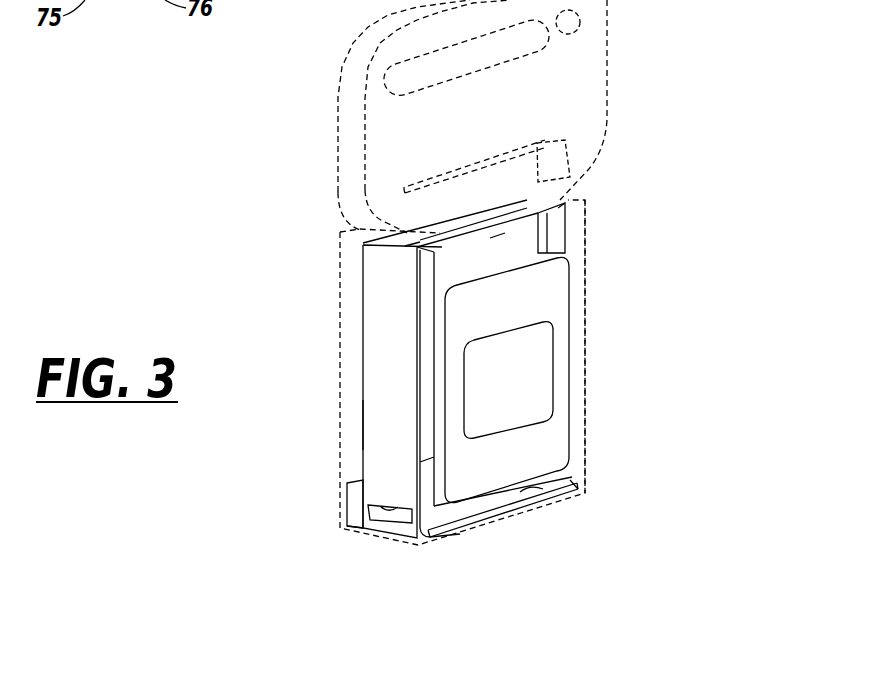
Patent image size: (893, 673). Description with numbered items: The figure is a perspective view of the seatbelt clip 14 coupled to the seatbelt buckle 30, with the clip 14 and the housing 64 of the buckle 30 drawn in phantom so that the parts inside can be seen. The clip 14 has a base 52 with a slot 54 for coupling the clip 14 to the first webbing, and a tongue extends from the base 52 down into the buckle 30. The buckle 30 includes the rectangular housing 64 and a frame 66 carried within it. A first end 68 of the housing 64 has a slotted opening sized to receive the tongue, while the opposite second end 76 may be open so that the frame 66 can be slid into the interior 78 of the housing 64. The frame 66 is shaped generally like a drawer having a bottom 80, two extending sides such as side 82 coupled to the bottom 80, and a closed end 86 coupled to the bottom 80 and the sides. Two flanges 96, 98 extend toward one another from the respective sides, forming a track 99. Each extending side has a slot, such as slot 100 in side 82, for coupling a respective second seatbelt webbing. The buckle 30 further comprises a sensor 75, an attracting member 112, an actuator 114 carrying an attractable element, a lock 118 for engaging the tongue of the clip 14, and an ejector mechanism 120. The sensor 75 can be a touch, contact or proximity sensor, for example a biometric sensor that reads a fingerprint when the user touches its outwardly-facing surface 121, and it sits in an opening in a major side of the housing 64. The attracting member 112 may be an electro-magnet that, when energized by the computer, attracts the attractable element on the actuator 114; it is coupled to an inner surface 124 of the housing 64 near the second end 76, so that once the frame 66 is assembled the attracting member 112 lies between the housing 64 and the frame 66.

The clip 14 is at (612, 125).
The buckle 30 is at (338, 275).
The base 52 is at (607, 87).
The slot 54 is at (578, 20).
The housing 64 is at (588, 227).
The frame 66 is at (571, 247).
The first end 68 is at (568, 188).
The sensor 75 is at (529, 395).
The second end 76 is at (567, 510).
The interior 78 is at (352, 358).
The bottom 80 is at (403, 240).
The extending side 82 is at (380, 418).
The closed end 86 is at (462, 533).
The flange 96 is at (427, 275).
The flange 98 is at (558, 208).
The track 99 is at (412, 246).
The slot 100 is at (385, 508).
The attracting member 112 is at (353, 531).
The actuator 114 is at (549, 297).
The lock 118 is at (497, 237).
The ejector mechanism 120 is at (454, 512).
The outwardly-facing surface 121 is at (537, 352).
The inner surface 124 is at (346, 507).